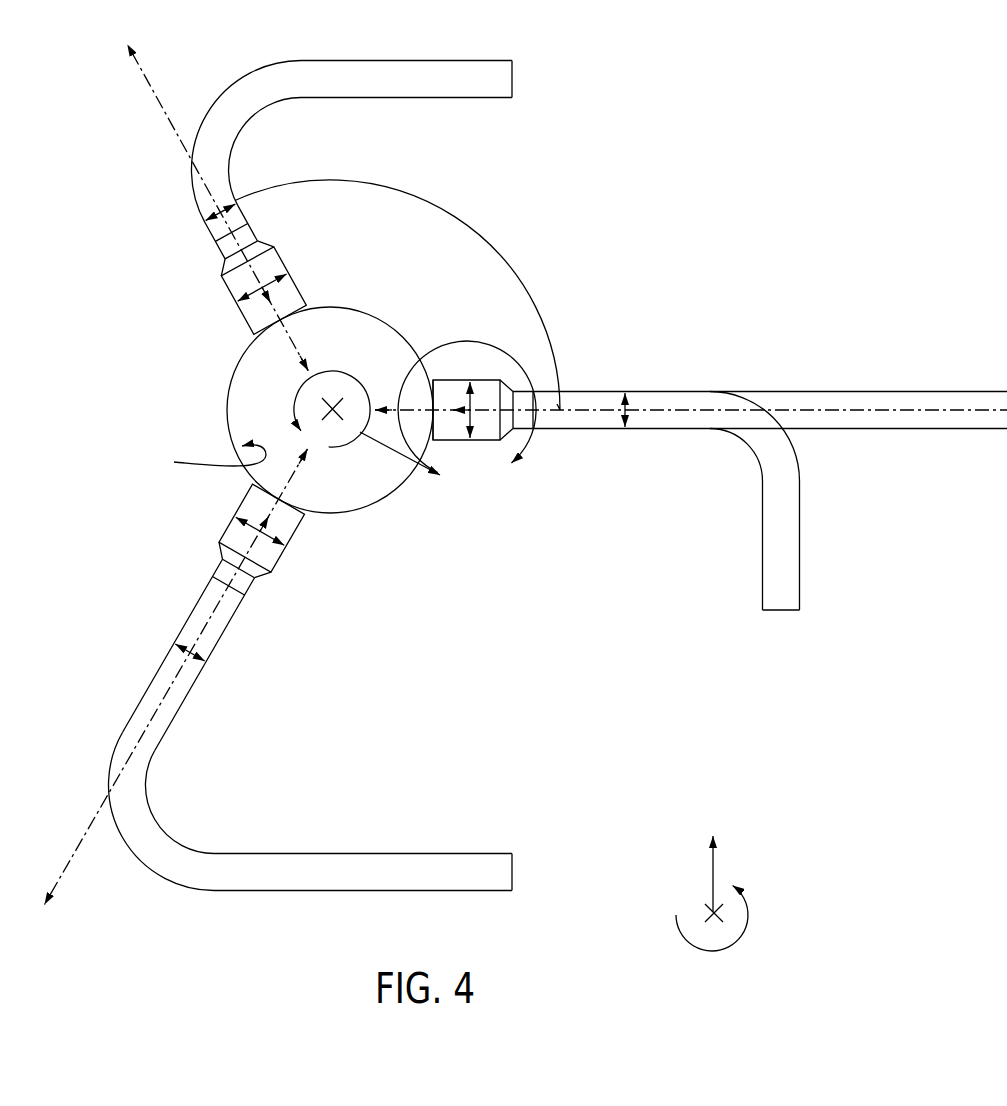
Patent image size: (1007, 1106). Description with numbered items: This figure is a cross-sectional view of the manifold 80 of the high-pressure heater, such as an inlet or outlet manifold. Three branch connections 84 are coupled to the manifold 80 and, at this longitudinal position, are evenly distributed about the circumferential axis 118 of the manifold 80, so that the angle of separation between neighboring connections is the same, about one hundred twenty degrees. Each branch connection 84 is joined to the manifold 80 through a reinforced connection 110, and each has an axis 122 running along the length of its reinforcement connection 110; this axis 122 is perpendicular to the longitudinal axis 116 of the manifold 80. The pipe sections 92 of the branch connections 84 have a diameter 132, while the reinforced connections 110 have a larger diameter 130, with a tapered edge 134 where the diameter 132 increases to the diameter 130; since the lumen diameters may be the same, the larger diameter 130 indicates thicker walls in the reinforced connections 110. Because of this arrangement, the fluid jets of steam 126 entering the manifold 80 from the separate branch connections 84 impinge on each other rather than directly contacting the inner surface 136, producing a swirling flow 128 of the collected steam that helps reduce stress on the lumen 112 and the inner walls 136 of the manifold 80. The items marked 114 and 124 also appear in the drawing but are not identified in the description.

The manifold 80 is at (276, 410).
The branch connection 84 is at (207, 94).
The pipe section 92 is at (438, 60).
The reinforced connection 110 is at (245, 328).
The lumen 112 is at (253, 397).
The vertical axis 114 is at (712, 878).
The longitudinal axis 116 is at (336, 420).
The circumferential axis 118 is at (735, 940).
The axis 122 is at (157, 72).
The outer arc 124 is at (447, 207).
The fluid jets of steam 126 is at (290, 340).
The swirling flow 128 is at (410, 455).
The diameter of reinforced connection 130 is at (252, 273).
The diameter of pipe section 132 is at (213, 200).
The tapered edge 134 is at (263, 243).
The inner surface 136 is at (200, 460).